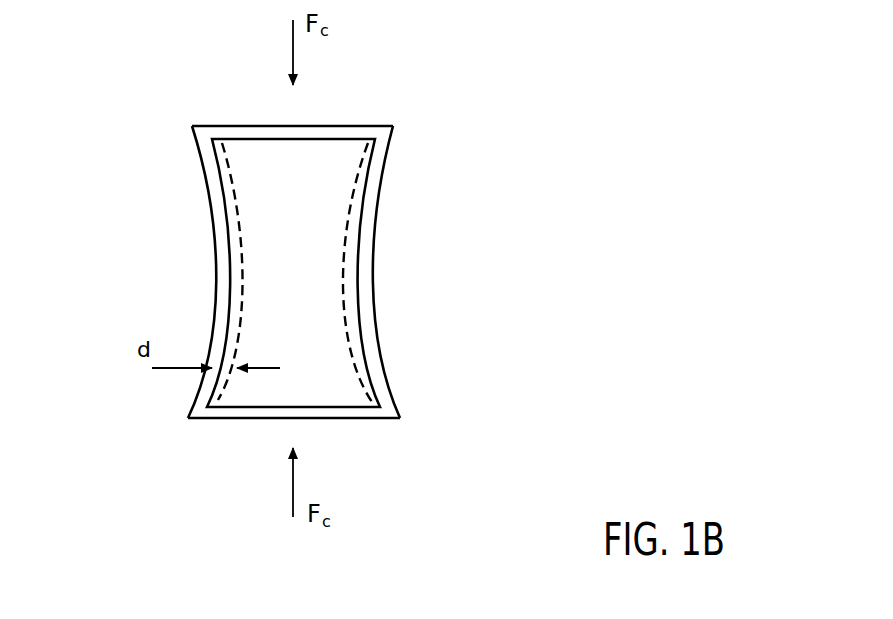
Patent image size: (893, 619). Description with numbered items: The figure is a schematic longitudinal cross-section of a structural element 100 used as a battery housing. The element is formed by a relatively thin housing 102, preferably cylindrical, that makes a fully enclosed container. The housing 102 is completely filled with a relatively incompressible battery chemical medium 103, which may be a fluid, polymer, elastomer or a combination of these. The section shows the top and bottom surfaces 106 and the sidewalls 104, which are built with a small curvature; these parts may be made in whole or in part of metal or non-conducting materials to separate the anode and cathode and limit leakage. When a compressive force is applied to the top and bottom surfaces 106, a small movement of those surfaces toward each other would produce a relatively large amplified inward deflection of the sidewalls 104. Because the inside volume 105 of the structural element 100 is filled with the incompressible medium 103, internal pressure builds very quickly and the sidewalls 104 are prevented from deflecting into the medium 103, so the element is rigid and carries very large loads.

The structural element 100 is at (150, 103).
The housing 102 is at (377, 232).
The incompressible medium 103 is at (330, 276).
The sidewalls 104 is at (217, 275).
The inside volume 105 is at (303, 263).
The top and bottom surfaces 106 is at (353, 125).